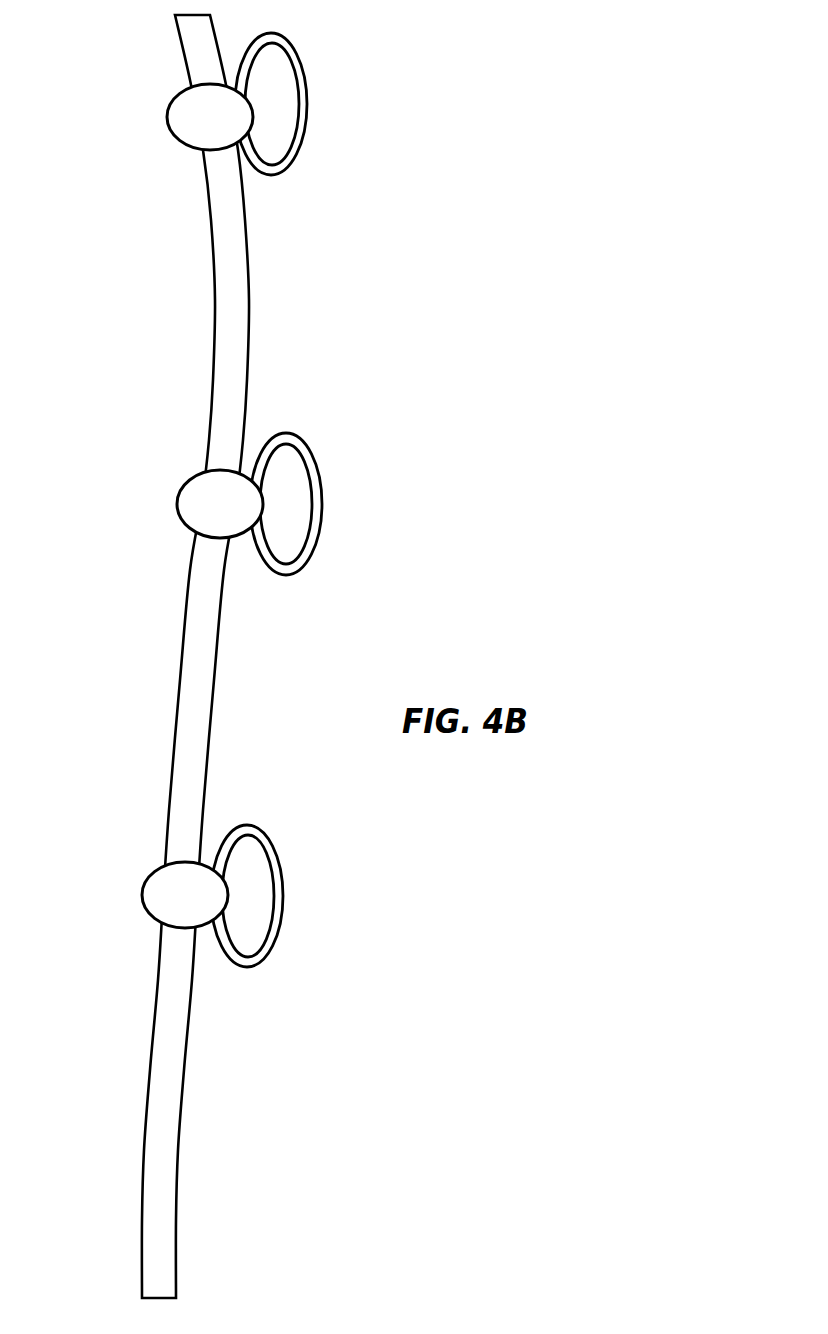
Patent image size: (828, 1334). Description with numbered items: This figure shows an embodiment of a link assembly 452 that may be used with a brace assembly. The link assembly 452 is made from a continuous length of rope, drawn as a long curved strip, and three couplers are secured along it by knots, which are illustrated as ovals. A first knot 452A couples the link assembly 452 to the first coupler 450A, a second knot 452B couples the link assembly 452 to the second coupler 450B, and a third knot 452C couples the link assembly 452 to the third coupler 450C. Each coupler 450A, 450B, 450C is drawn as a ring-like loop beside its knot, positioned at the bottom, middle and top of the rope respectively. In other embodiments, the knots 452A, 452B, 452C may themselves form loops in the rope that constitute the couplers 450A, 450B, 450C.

The link assembly 452 is at (178, 49).
The first knot 452A is at (142, 892).
The second knot 452B is at (177, 500).
The third knot 452C is at (167, 115).
The first coupler 450A is at (283, 905).
The second coupler 450B is at (322, 510).
The third coupler 450C is at (308, 113).